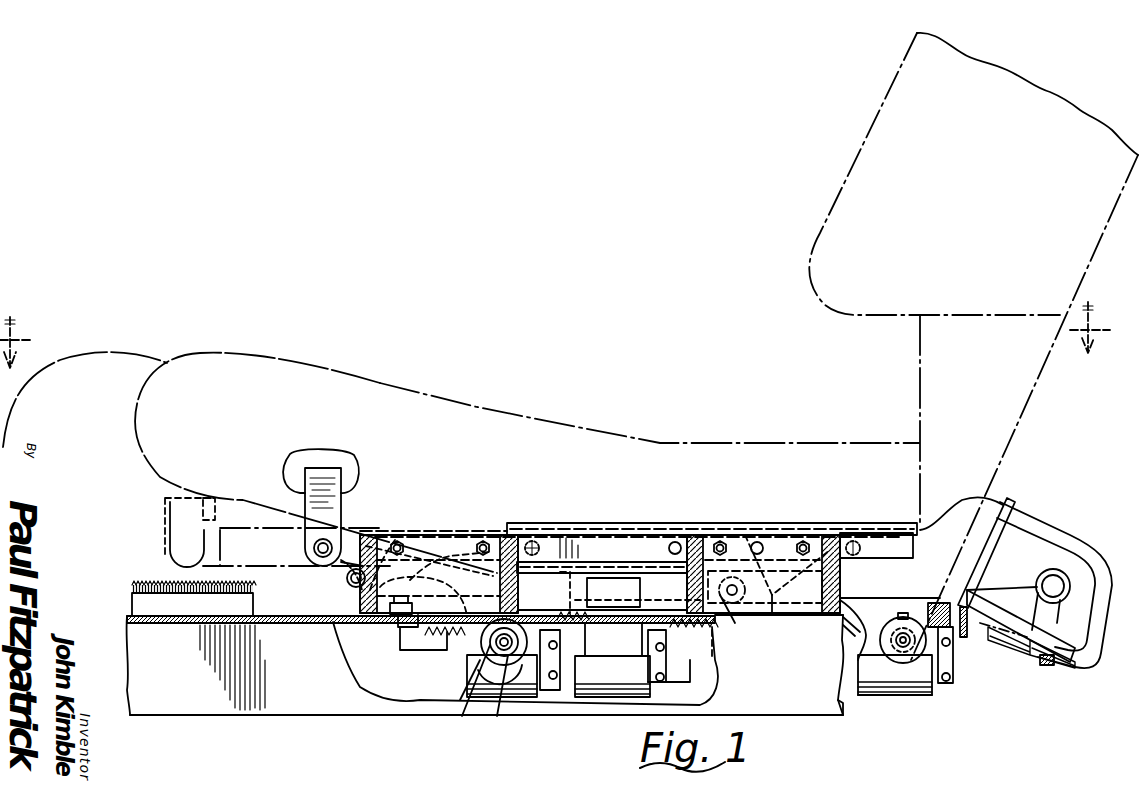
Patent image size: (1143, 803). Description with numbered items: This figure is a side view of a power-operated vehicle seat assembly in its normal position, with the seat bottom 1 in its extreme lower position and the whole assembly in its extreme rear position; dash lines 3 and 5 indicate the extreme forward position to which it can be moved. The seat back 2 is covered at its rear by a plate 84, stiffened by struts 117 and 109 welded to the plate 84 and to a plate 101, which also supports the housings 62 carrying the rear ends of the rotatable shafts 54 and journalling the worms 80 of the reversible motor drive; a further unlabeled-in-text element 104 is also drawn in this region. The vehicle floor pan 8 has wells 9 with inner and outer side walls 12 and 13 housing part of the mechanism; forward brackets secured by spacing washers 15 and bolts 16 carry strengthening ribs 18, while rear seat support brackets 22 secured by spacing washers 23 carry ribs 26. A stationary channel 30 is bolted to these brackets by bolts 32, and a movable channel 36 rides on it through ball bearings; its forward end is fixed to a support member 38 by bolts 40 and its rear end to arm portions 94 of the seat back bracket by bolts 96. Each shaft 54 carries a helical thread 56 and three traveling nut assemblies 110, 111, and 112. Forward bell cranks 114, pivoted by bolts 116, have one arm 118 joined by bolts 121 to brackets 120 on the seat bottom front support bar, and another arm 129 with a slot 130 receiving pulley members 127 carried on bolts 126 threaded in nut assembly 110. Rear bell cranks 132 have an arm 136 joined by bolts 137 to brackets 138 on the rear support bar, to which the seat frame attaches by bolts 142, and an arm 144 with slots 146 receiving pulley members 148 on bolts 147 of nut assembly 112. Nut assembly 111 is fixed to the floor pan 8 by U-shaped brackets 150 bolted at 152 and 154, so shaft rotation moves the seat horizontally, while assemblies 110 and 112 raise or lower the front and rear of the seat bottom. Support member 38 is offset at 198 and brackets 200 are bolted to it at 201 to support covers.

The seat bottom 1 is at (402, 388).
The seat back 2 is at (833, 202).
The dash lines 3 is at (70, 357).
The dash lines 5 is at (1090, 346).
The vehicle floor pan 8 is at (180, 627).
The wells 9 is at (793, 718).
The inner side wall 12 is at (412, 700).
The outer side wall 13 is at (847, 690).
The spacing washers 15 is at (392, 610).
The bolts 16 is at (398, 627).
The strengthening ribs 18 is at (337, 622).
The rear seat support brackets 22 is at (778, 600).
The spacing washers 23 is at (735, 623).
The strengthening ribs 26 is at (688, 588).
The channel 30 is at (460, 530).
The bolts 32 is at (397, 541).
The channel 36 is at (605, 524).
The support member 38 is at (443, 530).
The bolts 40 is at (676, 542).
The rotatable shafts 54 is at (675, 668).
The helical groove or thread 56 is at (613, 639).
The housings 62 is at (1020, 650).
The worms 80 is at (1065, 587).
The plate 84 is at (1088, 272).
The arm portions 94 is at (955, 520).
The bolts 96 is at (758, 542).
The plate 101 is at (1003, 500).
The rod 104 is at (362, 598).
The strut 109 is at (1048, 665).
The traveling nut assembly 110 is at (470, 698).
The traveling nut assembly 111 is at (596, 703).
The traveling nut assembly 112 is at (903, 695).
The forward bell cranks 114 is at (412, 652).
The bolts 116 is at (533, 540).
The strut 117 is at (1062, 533).
The arm 118 is at (447, 582).
The brackets 120 is at (352, 522).
The bolts 121 is at (340, 594).
The bolts 126 is at (550, 676).
The pulley members 127 is at (470, 667).
The arm 129 is at (507, 696).
The slot 130 is at (460, 700).
The rear bell cranks 132 is at (876, 545).
The arm 136 is at (772, 613).
The bolts 137 is at (740, 600).
The brackets 138 is at (685, 630).
The bolts 142 is at (442, 652).
The arm 144 is at (860, 640).
The slots 146 is at (925, 605).
The bolts 147 is at (895, 675).
The pulley members 148 is at (893, 625).
The U-shaped brackets 150 is at (585, 590).
The bolts 152 is at (613, 592).
The bolts 154 is at (853, 541).
The offset 198 is at (347, 576).
The brackets 200 is at (310, 513).
The bolts 201 is at (314, 548).